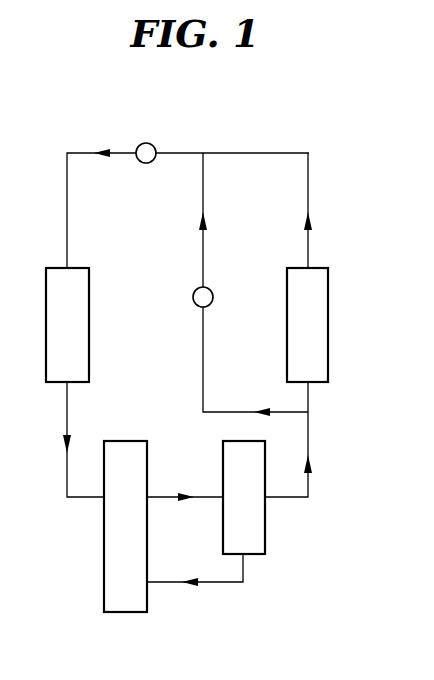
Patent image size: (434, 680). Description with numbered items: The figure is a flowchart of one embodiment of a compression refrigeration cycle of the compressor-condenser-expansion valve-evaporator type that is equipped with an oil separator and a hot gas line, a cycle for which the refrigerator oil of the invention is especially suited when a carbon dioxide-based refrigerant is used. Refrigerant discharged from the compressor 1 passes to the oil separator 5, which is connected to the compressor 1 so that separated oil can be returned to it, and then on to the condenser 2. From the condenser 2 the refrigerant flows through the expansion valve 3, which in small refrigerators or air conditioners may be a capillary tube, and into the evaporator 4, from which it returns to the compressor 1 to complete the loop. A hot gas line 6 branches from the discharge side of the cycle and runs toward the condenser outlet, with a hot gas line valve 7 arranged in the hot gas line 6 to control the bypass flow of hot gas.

The compressor 1 is at (116, 542).
The condenser 2 is at (299, 341).
The expansion valve 3 is at (146, 143).
The evaporator 4 is at (57, 341).
The oil separator 5 is at (234, 512).
The hot gas line 6 is at (204, 358).
The hot gas line valve 7 is at (193, 296).